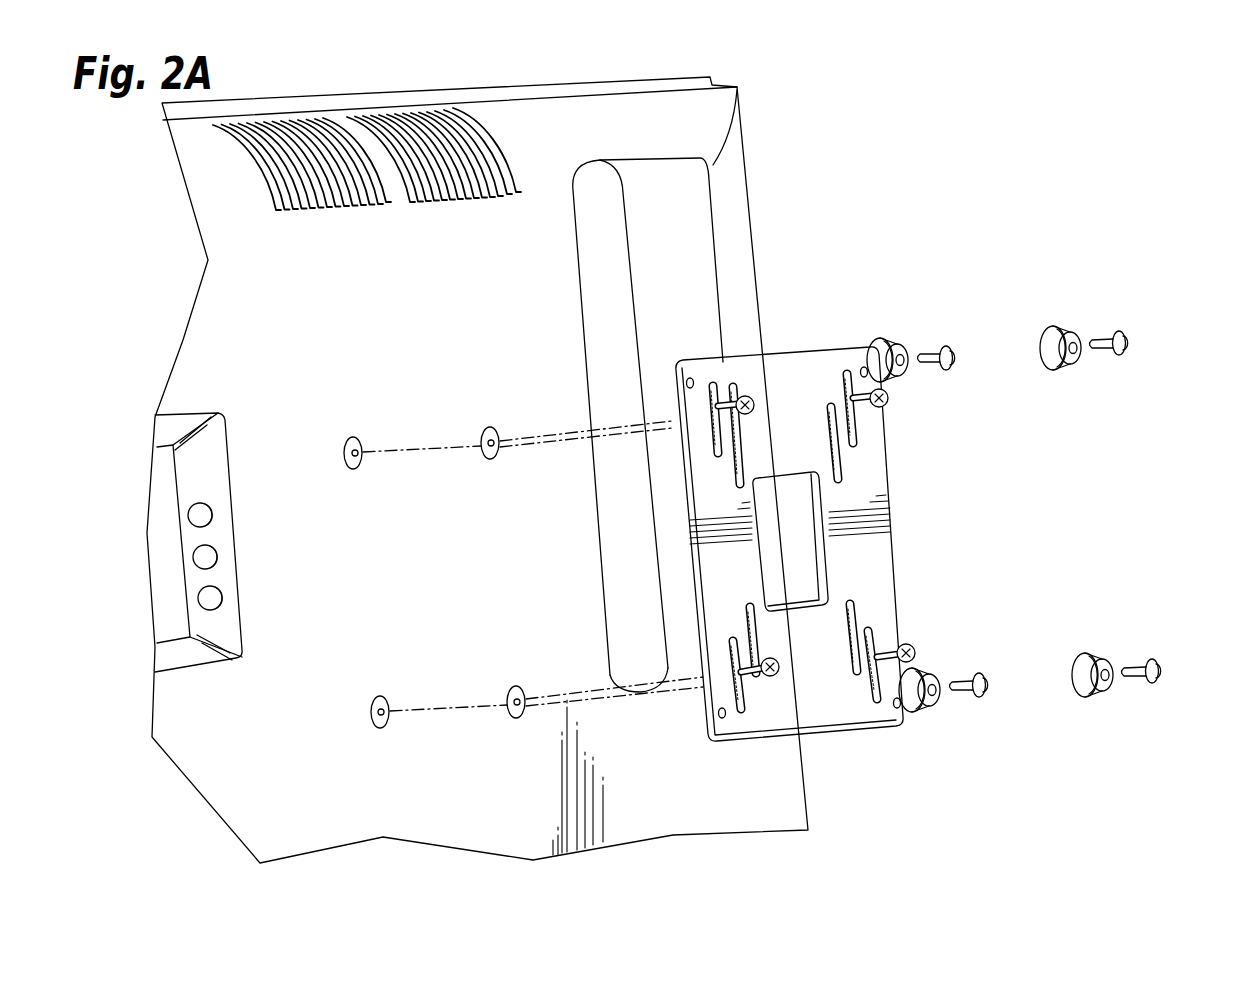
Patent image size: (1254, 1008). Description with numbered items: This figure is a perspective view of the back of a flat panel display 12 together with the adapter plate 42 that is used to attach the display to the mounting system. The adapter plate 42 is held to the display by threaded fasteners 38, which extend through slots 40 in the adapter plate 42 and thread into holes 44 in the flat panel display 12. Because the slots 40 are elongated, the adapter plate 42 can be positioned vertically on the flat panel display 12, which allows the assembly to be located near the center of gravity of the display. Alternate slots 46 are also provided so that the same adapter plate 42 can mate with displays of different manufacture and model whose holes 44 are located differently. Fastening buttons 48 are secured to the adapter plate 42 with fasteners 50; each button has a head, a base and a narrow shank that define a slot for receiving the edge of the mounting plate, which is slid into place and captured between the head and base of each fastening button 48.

The flat panel display 12 is at (316, 781).
The threaded fasteners 38 is at (744, 398).
The slots 40 is at (715, 384).
The adapter plate 42 is at (902, 714).
The holes 44 is at (358, 440).
The alternate slots 46 is at (740, 470).
The fastening buttons 48 is at (1045, 327).
The fasteners 50 is at (951, 343).